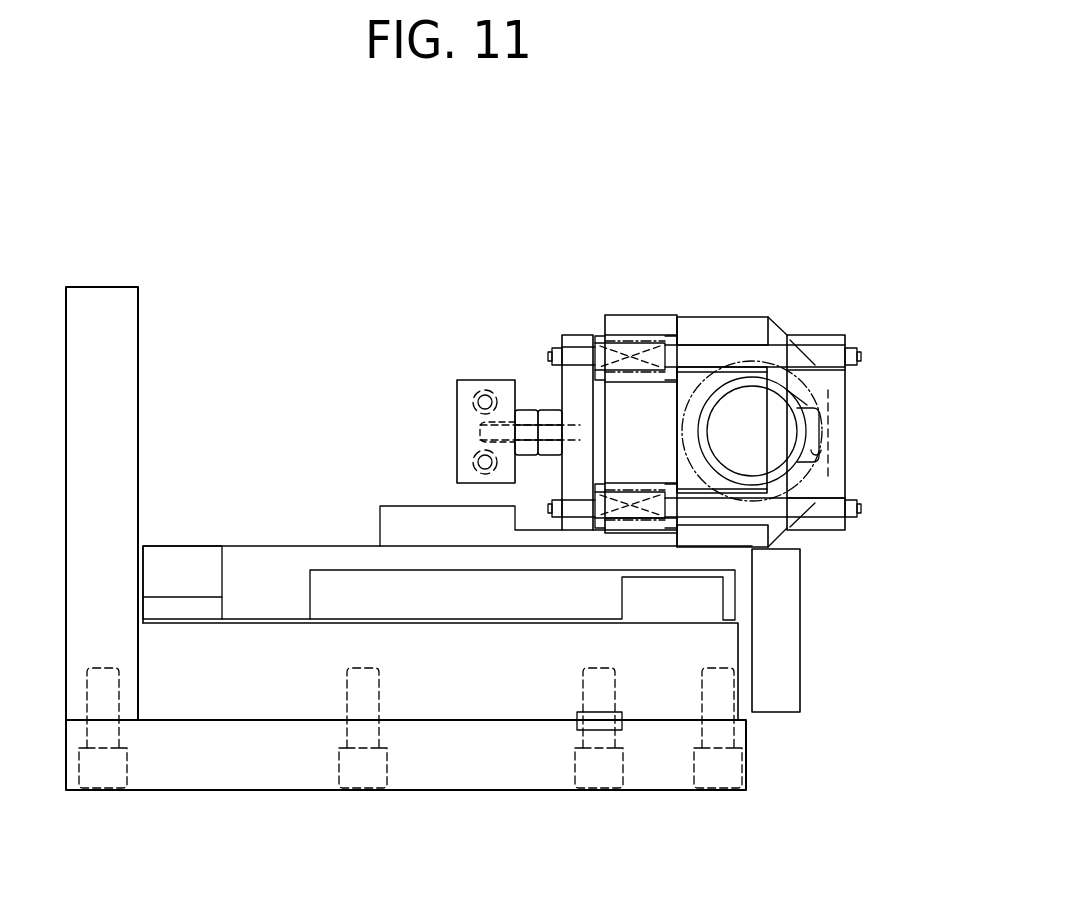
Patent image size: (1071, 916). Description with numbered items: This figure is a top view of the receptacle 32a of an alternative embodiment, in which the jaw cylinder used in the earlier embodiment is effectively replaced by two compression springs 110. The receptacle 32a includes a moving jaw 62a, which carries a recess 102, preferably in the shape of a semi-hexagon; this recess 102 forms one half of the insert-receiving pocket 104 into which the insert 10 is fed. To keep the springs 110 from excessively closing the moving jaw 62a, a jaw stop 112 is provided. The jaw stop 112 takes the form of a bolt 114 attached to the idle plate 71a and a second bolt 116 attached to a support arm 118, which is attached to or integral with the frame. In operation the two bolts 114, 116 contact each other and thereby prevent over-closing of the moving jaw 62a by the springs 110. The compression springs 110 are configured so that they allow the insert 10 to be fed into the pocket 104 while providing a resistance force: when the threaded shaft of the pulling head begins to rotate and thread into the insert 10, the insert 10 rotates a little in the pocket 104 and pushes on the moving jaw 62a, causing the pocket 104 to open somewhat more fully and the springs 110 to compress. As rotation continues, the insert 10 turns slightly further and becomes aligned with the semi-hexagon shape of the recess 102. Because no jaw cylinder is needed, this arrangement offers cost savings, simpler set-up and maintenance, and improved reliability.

The insert 10 is at (820, 410).
The receptacle 32a is at (826, 311).
The moving jaw 62a is at (845, 335).
The idle plate 71a is at (573, 335).
The recess 102 is at (820, 452).
The insert-receiving pocket 104 is at (818, 390).
The compression springs 110 is at (632, 343).
The jaw stop 112 is at (543, 407).
The bolt 114 is at (570, 413).
The bolt 116 is at (540, 403).
The support arm 118 is at (457, 430).